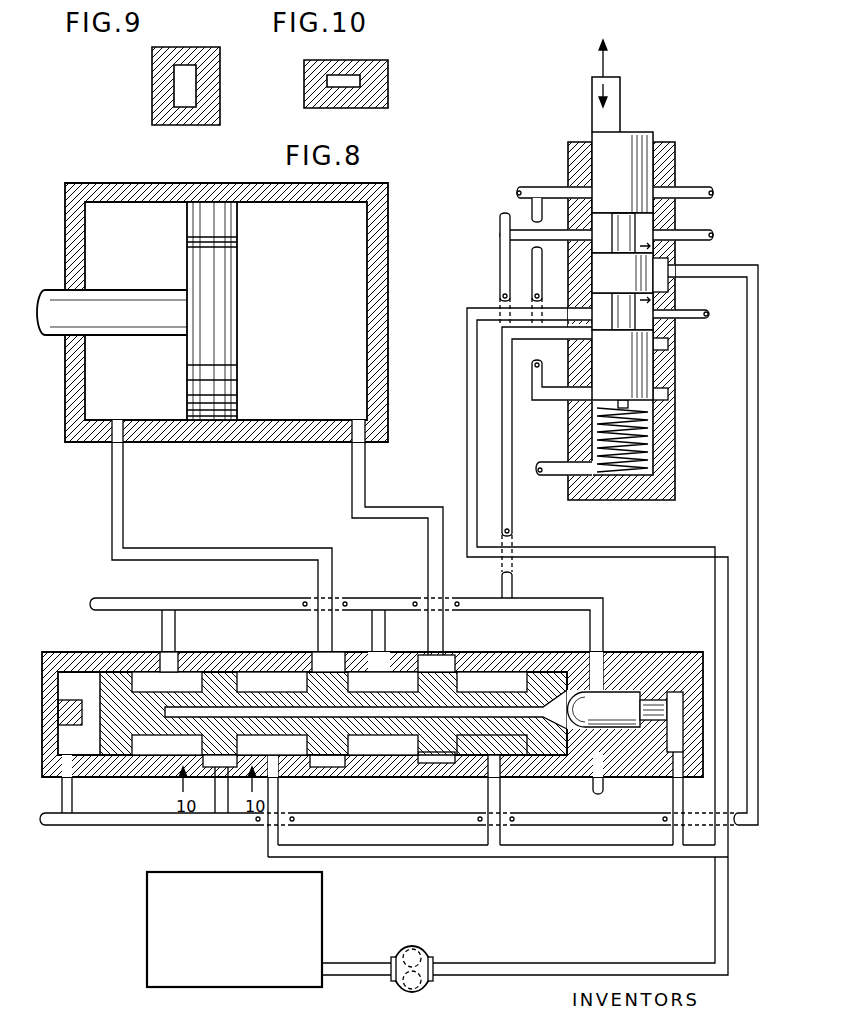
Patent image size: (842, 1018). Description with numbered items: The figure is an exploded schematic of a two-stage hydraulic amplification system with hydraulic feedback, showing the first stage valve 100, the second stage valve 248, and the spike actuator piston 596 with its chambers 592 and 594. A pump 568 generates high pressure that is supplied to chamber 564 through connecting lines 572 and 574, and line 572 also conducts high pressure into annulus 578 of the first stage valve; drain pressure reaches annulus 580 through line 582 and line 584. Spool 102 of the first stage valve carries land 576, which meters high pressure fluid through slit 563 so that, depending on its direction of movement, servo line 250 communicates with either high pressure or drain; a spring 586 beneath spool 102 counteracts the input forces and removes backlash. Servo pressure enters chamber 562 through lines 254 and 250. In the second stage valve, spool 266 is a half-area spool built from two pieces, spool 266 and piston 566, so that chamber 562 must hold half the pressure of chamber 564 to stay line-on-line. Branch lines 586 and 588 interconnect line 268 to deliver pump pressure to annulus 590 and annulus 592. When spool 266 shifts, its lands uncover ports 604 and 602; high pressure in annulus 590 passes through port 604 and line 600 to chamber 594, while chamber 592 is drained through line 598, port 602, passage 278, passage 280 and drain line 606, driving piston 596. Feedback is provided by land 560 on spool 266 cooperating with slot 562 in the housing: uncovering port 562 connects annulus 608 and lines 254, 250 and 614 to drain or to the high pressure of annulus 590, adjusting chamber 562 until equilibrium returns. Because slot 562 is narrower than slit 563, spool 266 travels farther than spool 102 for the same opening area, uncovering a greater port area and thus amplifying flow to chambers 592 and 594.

In FIG. 8, the first stage valve 100 is at (631, 88).
In FIG. 8, the spool 102 is at (640, 135).
In FIG. 8, the annulus 580 is at (652, 221).
In FIG. 8, the line 582 is at (520, 233).
In FIG. 8, the land 576 is at (655, 262).
In FIG. 9, the slit 563 is at (175, 88).
In FIG. 8, the slit 563 is at (670, 290).
In FIG. 8, the annulus 578 is at (675, 335).
In FIG. 8, the spring 586 is at (655, 435).
In FIG. 8, the connecting line 572 is at (468, 456).
In FIG. 8, the line 584 is at (511, 515).
In FIG. 8, the servo line 250 is at (747, 518).
In FIG. 8, the piston 596 is at (223, 226).
In FIG. 8, the chamber 592 is at (468, 785).
In FIG. 8, the chamber 594 is at (112, 334).
In FIG. 8, the line 600 is at (125, 496).
In FIG. 8, the line 598 is at (353, 490).
In FIG. 8, the drain line 606 is at (238, 588).
In FIG. 8, the land 560 is at (255, 654).
In FIG. 8, the annulus 608 is at (150, 760).
In FIG. 8, the passage 278 is at (362, 692).
In FIG. 8, the passage 280 is at (500, 705).
In FIG. 8, the port 602 is at (445, 652).
In FIG. 8, the spool 266 is at (110, 654).
In FIG. 8, the port 604 is at (312, 652).
In FIG. 10, the slot 562 is at (362, 81).
In FIG. 8, the slot 562 is at (212, 752).
In FIG. 8, the annulus 590 is at (292, 756).
In FIG. 8, the piston 566 is at (618, 695).
In FIG. 8, the chamber 564 is at (673, 695).
In FIG. 8, the line 254 is at (70, 798).
In FIG. 8, the line 614 is at (225, 830).
In FIG. 8, the branch line 588 is at (500, 792).
In FIG. 8, the connecting line 574 is at (675, 792).
In FIG. 8, the line 268 is at (435, 855).
In FIG. 8, the pump 568 is at (415, 946).
In FIG. 8, the second stage valve 248 is at (158, 831).